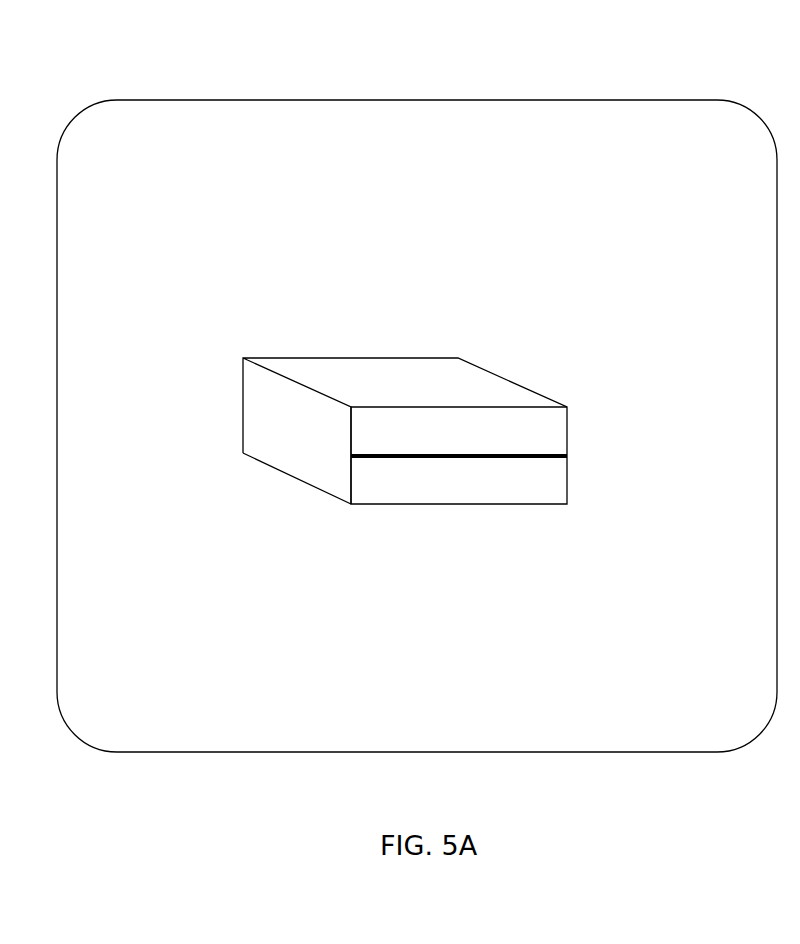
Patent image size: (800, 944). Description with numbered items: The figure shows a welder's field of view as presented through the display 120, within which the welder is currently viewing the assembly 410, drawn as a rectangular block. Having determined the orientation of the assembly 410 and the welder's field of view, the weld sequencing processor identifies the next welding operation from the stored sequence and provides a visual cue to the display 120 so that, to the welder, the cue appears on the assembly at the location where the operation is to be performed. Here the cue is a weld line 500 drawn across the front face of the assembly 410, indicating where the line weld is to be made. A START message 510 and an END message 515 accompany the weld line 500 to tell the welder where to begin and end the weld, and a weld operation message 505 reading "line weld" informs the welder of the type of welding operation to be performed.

The display 120 is at (581, 100).
The assembly 410 is at (363, 358).
The weld line 500 is at (436, 489).
The weld operation message 505 is at (209, 658).
The START message 510 is at (284, 439).
The END message 515 is at (612, 409).